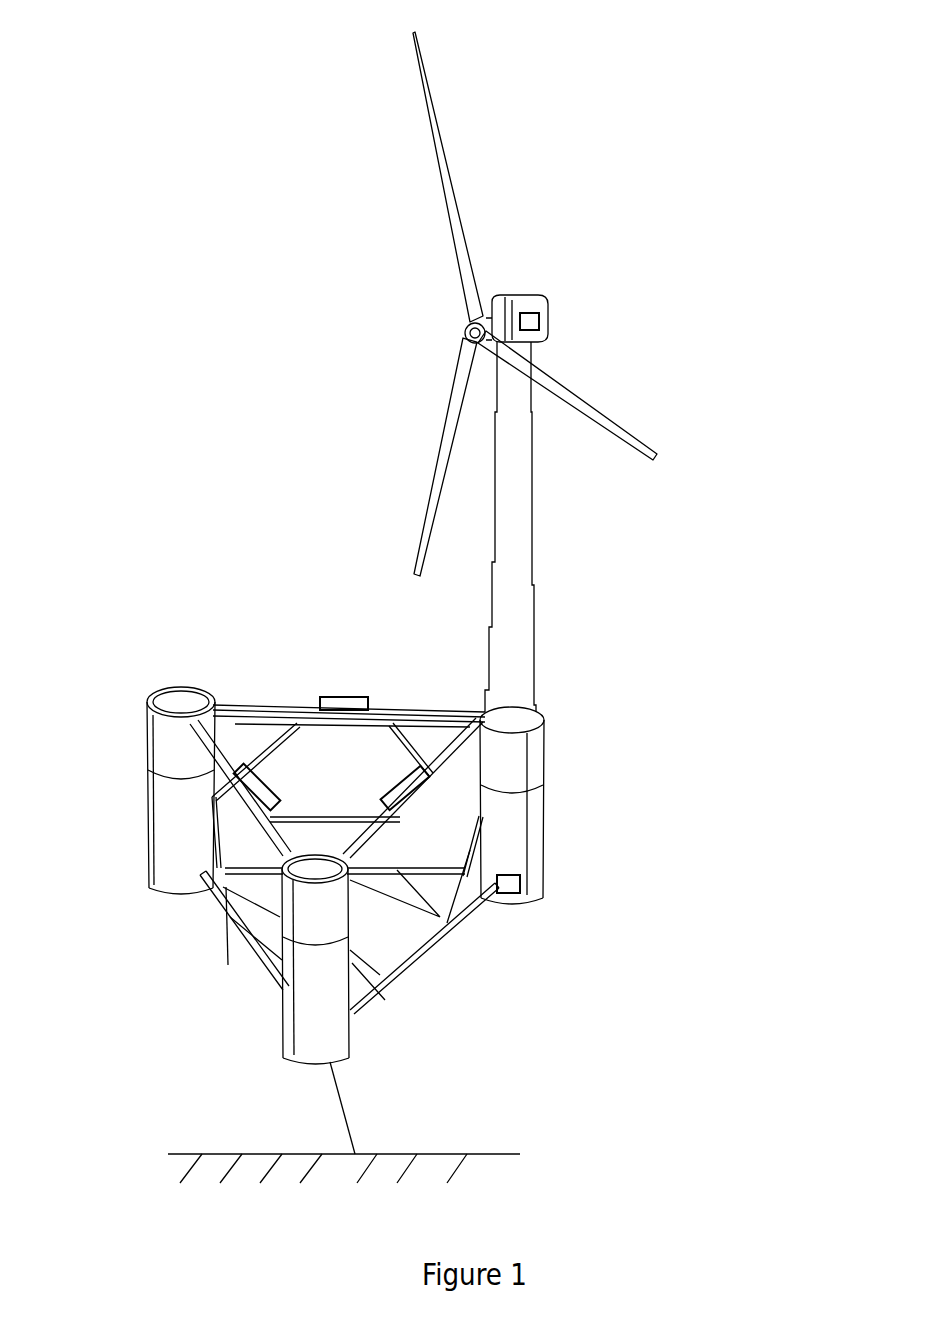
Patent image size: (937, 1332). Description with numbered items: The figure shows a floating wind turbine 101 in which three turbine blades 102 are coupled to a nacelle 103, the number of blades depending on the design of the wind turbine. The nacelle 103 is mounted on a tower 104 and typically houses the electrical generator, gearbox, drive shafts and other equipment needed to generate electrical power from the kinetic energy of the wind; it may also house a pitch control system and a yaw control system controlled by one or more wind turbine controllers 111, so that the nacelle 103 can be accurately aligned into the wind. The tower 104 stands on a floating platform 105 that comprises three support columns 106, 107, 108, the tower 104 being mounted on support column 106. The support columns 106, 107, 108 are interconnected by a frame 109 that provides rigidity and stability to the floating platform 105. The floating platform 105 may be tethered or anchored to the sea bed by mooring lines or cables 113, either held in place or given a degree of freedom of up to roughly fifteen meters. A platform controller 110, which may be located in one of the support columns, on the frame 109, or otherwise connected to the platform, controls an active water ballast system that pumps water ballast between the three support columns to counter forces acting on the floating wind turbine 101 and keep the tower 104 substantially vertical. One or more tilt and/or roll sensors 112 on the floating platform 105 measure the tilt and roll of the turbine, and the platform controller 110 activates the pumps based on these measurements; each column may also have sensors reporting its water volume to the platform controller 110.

The floating wind turbine 101 is at (124, 67).
The turbine blades 102 is at (445, 183).
The nacelle 103 is at (530, 297).
The tower 104 is at (520, 567).
The floating platform 105 is at (166, 651).
The support column 106 is at (537, 765).
The support column 107 is at (338, 1023).
The support column 108 is at (162, 747).
The frame 109 is at (267, 707).
The platform controller 110 is at (520, 890).
The wind turbine controller 111 is at (533, 323).
The tilt and/or roll sensors 112 is at (397, 780).
The mooring lines or cables 113 is at (340, 1098).